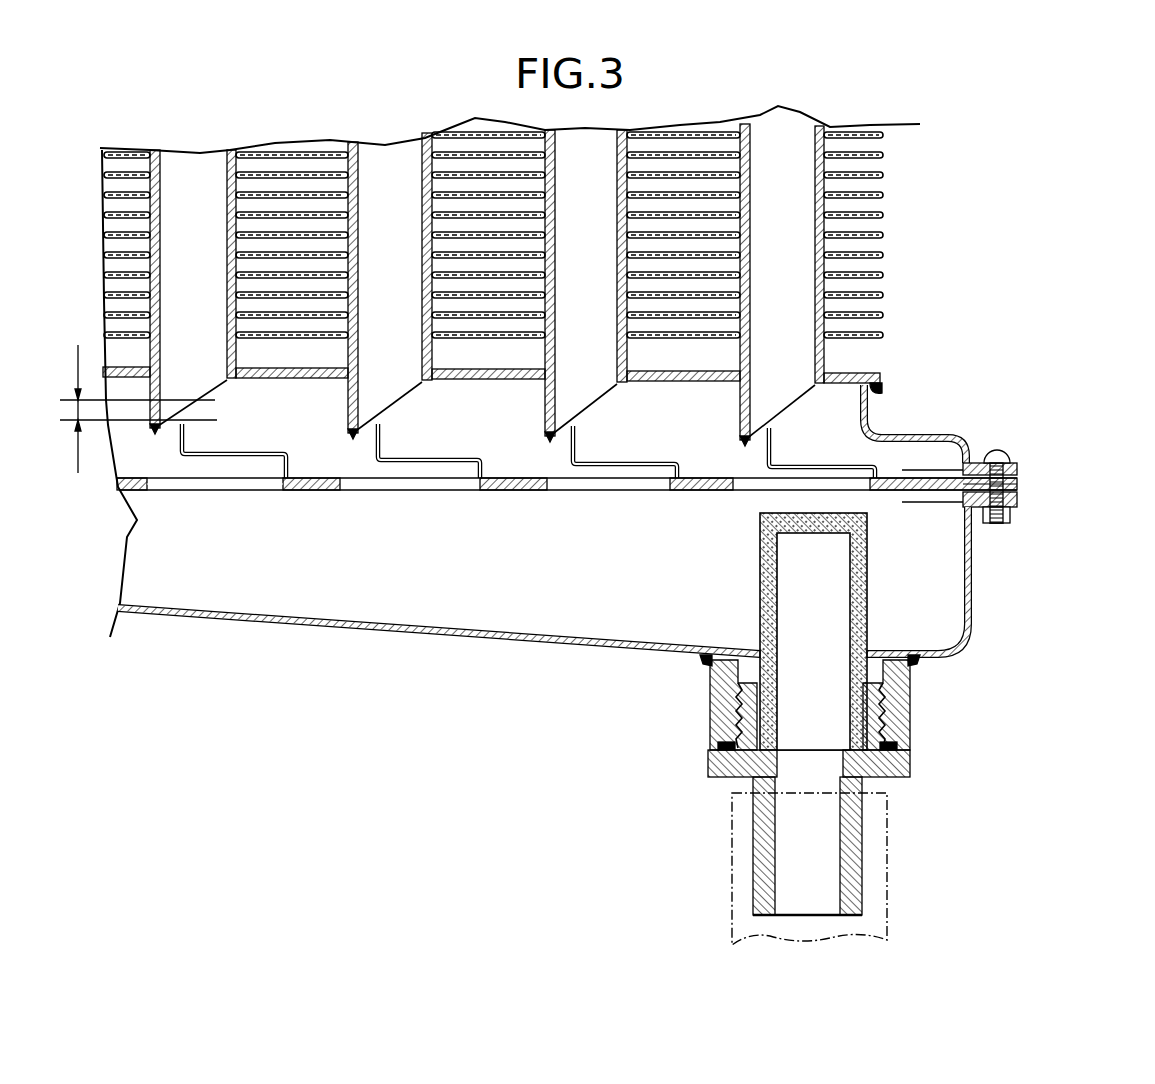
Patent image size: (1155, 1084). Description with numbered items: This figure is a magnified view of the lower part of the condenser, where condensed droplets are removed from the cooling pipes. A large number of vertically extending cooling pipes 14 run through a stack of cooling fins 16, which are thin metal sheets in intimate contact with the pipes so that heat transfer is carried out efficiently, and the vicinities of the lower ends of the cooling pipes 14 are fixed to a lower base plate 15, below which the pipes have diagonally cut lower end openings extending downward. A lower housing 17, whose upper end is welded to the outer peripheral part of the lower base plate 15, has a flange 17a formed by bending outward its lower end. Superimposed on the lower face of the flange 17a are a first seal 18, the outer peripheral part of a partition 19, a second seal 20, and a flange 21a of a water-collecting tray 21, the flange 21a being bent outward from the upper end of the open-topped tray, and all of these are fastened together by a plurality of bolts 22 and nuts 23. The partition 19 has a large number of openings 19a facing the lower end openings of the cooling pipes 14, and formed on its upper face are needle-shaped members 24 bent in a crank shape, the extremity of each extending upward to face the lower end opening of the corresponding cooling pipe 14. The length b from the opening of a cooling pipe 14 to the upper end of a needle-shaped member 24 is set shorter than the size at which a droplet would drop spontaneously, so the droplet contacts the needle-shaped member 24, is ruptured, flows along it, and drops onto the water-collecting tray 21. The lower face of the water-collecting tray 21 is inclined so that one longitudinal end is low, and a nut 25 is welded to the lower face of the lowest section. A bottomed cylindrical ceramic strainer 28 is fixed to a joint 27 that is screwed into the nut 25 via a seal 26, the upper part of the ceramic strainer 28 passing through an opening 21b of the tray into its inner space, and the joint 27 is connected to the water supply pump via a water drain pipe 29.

The cooling pipe 14 is at (157, 336).
The lower base plate 15 is at (500, 378).
The cooling fin 16 is at (883, 340).
The lower housing 17 is at (920, 428).
The flange 17a is at (1017, 465).
The first seal 18 is at (1018, 478).
The partition 19 is at (520, 495).
The opening 19a is at (200, 480).
The second seal 20 is at (1020, 493).
The water-collecting tray 21 is at (443, 655).
The flange 21a is at (1017, 517).
The opening 21b is at (777, 652).
The bolt 22 is at (999, 452).
The nut 23 is at (997, 525).
The needle-shaped member 24 is at (217, 452).
The nut 25 is at (712, 668).
The seal 26 is at (735, 745).
The joint 27 is at (757, 805).
The ceramic strainer 28 is at (867, 540).
The water drain pipe 29 is at (732, 860).
The length b is at (74, 407).